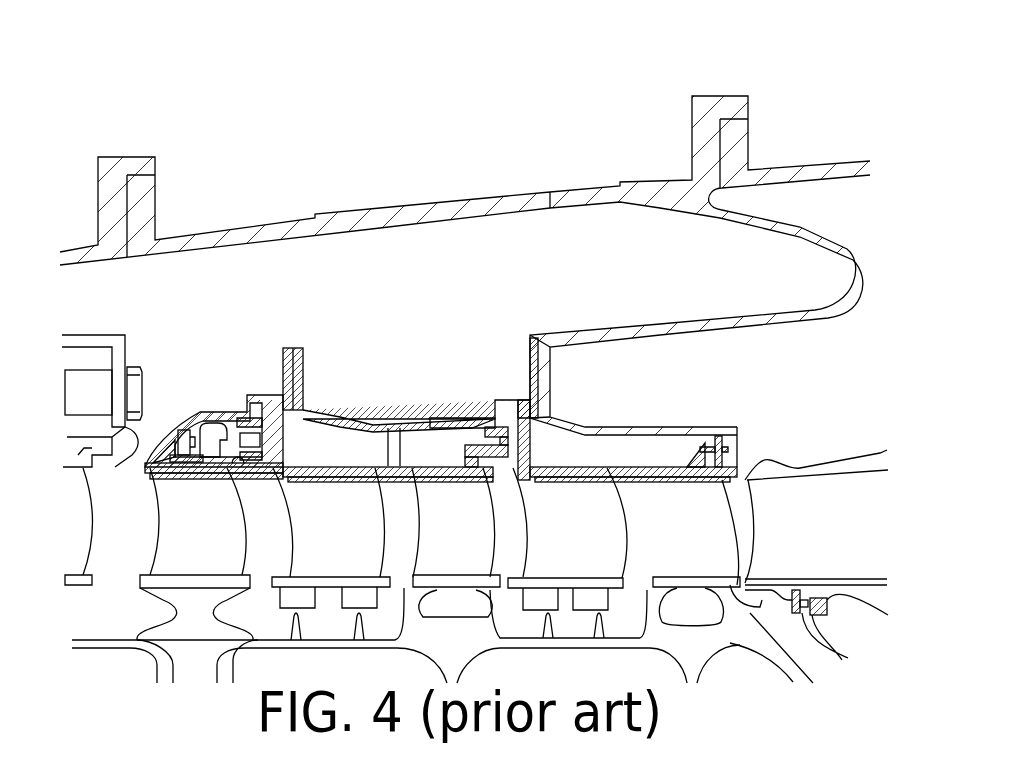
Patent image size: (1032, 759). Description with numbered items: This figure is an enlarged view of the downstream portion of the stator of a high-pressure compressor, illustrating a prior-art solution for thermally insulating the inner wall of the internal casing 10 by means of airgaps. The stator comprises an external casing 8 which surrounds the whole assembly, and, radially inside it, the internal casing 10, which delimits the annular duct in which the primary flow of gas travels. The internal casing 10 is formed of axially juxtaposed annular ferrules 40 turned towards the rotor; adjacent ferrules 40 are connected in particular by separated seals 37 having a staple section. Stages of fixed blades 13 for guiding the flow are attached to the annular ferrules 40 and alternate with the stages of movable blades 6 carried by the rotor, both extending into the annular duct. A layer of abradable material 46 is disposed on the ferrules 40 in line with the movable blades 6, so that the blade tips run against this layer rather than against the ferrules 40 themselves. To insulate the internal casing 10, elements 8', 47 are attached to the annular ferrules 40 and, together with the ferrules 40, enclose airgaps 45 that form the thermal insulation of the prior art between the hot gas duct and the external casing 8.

The external casing 8 is at (516, 379).
The element attached to the annular ferrules 8' is at (582, 378).
The internal casing 10 is at (420, 320).
The movable blades 6 is at (187, 515).
The fixed blades 13 is at (312, 510).
The seals 37 is at (285, 440).
The annular ferrules 40 is at (183, 445).
The airgap 45 is at (213, 440).
The layer of abradable material 46 is at (187, 476).
The element attached to the annular ferrules 47 is at (238, 398).